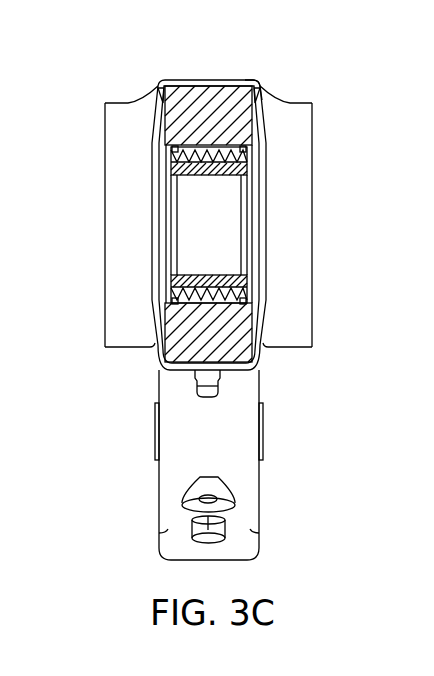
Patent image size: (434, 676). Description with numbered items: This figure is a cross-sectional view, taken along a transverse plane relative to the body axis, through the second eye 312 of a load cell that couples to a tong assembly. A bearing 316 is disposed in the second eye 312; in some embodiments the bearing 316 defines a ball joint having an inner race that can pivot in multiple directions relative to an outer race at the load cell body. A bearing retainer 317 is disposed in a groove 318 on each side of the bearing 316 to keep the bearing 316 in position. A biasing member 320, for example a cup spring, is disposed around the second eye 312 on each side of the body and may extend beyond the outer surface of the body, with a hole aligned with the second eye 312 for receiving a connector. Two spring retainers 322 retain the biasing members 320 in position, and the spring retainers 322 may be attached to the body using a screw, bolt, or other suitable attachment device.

The second eye 312 is at (205, 208).
The bearing 316 is at (203, 145).
The bearing retainer 317 is at (240, 148).
The groove 318 is at (252, 82).
The biasing member 320 is at (267, 226).
The spring retainer 322 is at (172, 82).